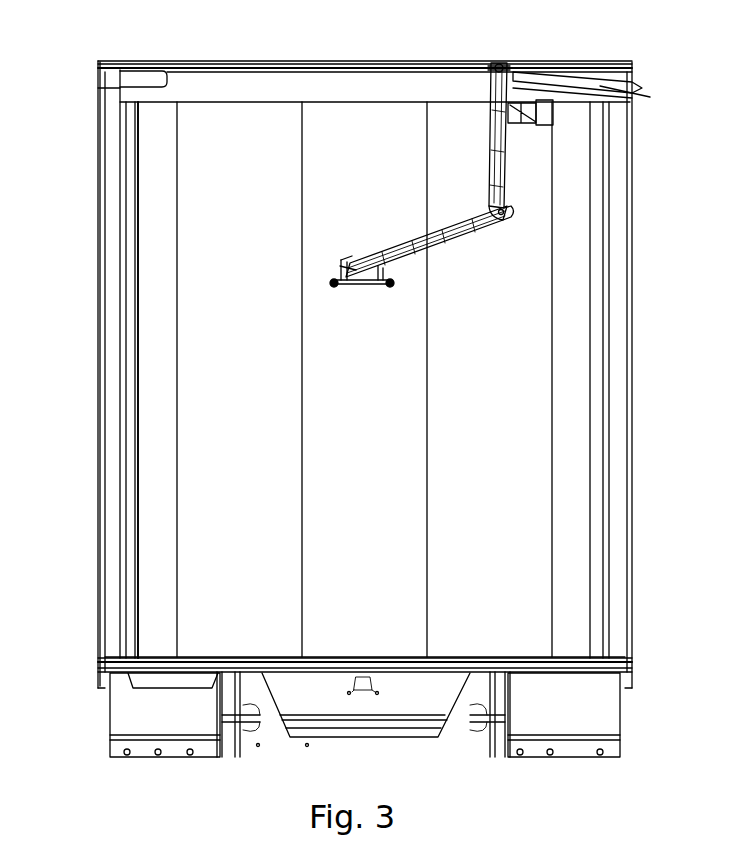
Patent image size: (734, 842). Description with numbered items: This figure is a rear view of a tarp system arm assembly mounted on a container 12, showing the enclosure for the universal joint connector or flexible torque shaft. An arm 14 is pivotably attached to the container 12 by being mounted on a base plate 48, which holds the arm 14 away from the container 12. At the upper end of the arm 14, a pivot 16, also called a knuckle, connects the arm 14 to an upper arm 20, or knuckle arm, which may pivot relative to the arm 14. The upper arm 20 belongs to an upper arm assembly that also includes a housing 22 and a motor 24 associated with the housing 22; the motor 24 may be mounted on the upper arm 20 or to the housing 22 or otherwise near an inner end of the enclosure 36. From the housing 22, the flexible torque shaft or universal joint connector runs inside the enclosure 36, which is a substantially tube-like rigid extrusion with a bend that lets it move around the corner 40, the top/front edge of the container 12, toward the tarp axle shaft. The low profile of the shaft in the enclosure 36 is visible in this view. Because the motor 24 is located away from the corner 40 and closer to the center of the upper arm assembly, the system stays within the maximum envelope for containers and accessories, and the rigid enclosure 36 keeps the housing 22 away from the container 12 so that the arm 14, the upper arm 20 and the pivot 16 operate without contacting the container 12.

The container 12 is at (157, 147).
The arm 14 is at (417, 253).
The pivot 16 is at (503, 232).
The upper arm 20 is at (498, 163).
The housing 22 is at (505, 65).
The motor 24 is at (550, 120).
The enclosure 36 is at (641, 88).
The corner 40 is at (613, 63).
The base plate 48 is at (340, 261).